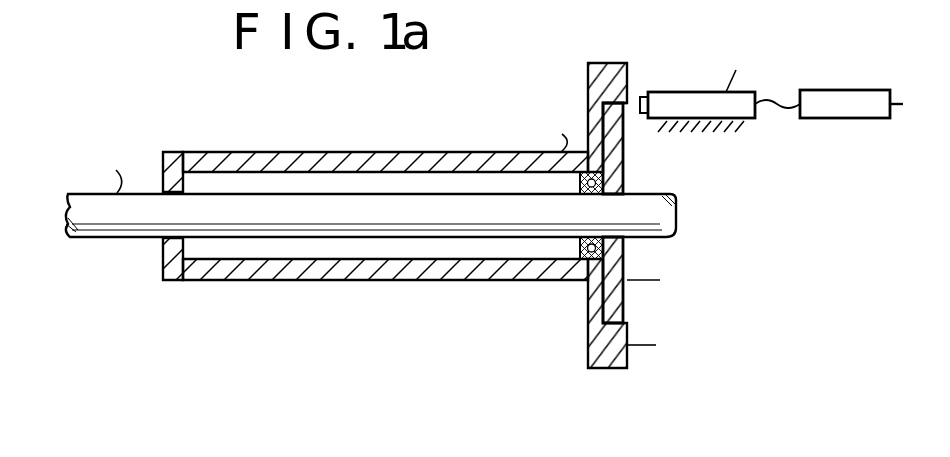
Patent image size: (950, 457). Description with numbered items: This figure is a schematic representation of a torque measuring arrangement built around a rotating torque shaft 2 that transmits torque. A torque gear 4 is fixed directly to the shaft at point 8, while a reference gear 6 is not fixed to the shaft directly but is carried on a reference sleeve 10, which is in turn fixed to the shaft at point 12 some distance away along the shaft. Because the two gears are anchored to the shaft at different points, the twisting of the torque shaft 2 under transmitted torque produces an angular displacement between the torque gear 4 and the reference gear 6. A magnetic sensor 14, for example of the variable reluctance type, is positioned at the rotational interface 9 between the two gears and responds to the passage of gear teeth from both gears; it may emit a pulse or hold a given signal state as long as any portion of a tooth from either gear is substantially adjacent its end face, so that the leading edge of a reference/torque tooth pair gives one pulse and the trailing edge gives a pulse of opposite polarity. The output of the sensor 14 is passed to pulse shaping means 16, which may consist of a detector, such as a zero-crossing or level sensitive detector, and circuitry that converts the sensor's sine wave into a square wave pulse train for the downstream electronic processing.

The torque shaft 2 is at (128, 238).
The torque gear 4 is at (621, 297).
The reference gear 6 is at (627, 362).
The point 8 is at (606, 197).
The rotational interface 9 is at (627, 105).
The reference sleeve 10 is at (236, 152).
The point 12 is at (152, 153).
The magnetic sensor 14 is at (656, 92).
The pulse shaping means 16 is at (866, 62).